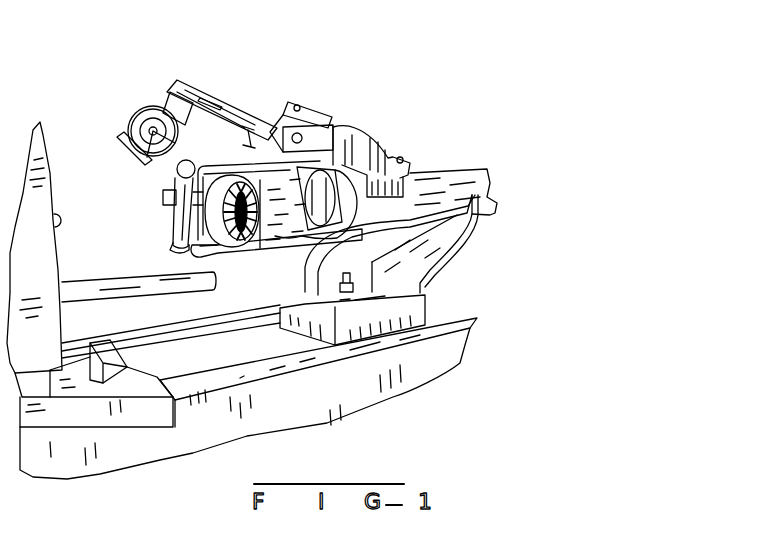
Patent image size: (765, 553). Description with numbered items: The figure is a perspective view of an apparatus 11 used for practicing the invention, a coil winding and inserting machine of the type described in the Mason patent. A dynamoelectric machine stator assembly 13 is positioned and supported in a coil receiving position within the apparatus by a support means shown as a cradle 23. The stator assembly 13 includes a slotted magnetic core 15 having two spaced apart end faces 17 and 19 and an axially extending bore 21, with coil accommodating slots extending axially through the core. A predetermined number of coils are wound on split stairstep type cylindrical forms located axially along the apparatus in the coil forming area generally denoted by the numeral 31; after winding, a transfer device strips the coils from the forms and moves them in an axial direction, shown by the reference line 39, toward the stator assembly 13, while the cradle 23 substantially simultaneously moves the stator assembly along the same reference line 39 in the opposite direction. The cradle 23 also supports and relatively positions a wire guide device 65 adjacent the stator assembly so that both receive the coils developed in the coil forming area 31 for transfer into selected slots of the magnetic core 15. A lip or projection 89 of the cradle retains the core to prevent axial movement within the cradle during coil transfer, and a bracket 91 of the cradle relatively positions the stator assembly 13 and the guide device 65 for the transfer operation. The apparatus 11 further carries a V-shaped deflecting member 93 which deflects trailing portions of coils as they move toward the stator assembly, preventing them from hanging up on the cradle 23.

The apparatus 11 is at (413, 104).
The dynamoelectric machine stator assembly 13 is at (239, 161).
The slotted magnetic core 15 is at (261, 182).
The end face 17 is at (250, 240).
The end face 19 is at (283, 263).
The axially extending bore 21 is at (236, 230).
The cradle 23 is at (290, 167).
The coil forming area 31 is at (55, 161).
The reference line 39 is at (125, 216).
The wire guide device 65 is at (223, 178).
The lip or projection 89 is at (290, 165).
The bracket 91 is at (180, 205).
The V-shaped deflecting member 93 is at (172, 243).